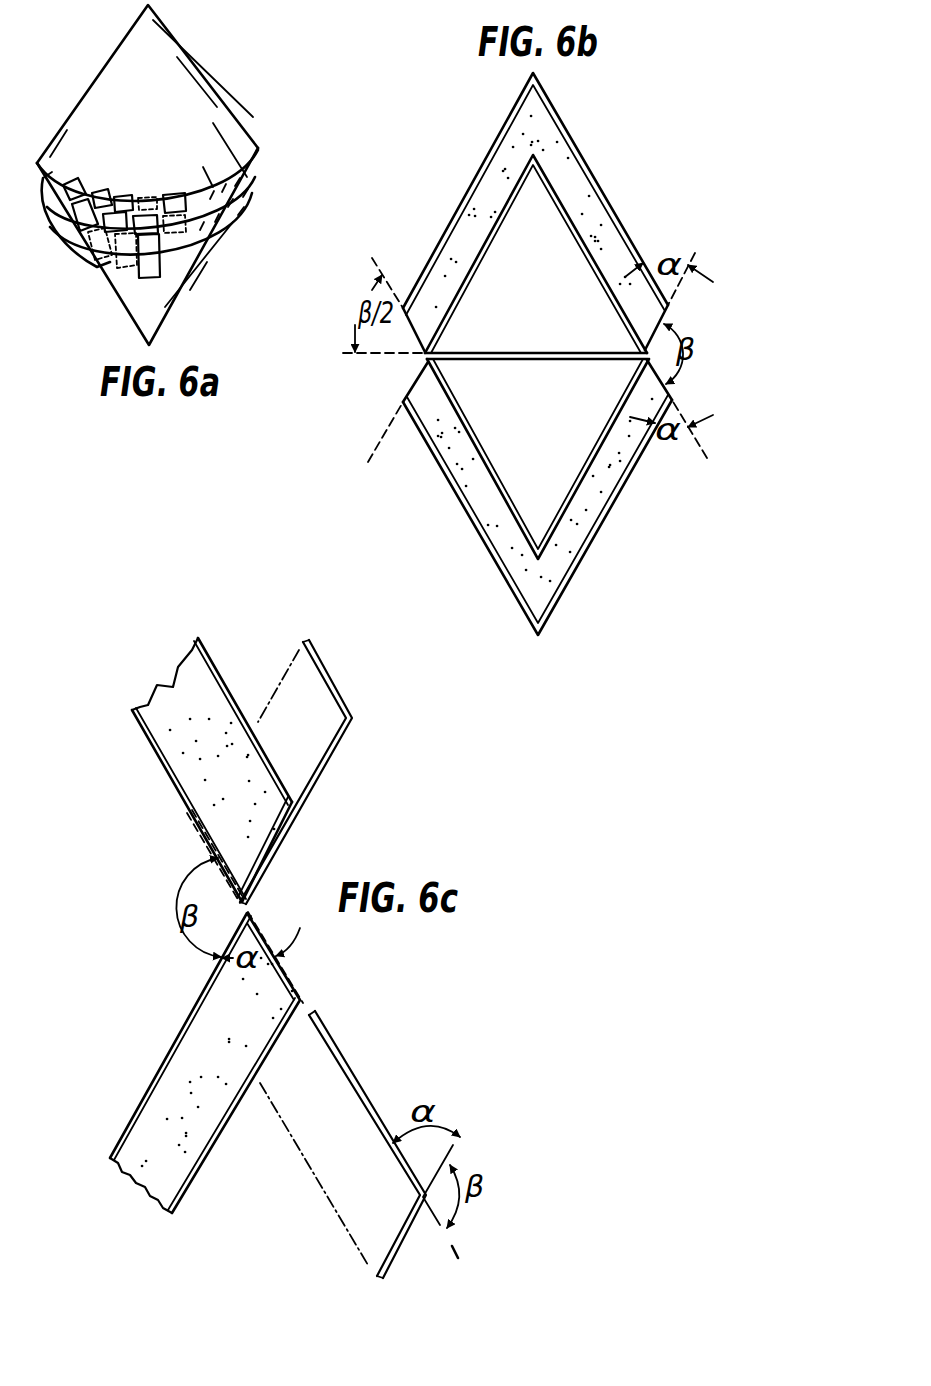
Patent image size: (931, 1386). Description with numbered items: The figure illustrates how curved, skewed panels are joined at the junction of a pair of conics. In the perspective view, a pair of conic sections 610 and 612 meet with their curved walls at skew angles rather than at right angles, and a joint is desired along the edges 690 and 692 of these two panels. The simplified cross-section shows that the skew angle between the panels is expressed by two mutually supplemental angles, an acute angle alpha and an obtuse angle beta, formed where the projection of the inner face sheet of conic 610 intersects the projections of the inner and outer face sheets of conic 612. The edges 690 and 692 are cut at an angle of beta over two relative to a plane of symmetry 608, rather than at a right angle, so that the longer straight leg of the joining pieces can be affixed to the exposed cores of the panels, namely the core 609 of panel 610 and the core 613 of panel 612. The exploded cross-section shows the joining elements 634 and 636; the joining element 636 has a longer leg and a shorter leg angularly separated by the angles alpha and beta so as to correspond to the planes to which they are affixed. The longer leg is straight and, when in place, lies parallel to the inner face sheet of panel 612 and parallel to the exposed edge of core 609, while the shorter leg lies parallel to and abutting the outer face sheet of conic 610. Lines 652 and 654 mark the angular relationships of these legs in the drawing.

In FIG. 6b, the plane of symmetry 608 is at (389, 355).
In FIG. 6b, the core 609 is at (513, 565).
In FIG. 6c, the core 609 is at (149, 1190).
In FIG. 6a, the conic section 610 is at (190, 283).
In FIG. 6b, the conic section 610 is at (553, 615).
In FIG. 6c, the conic section 610 is at (126, 1170).
In FIG. 6a, the conic section 612 is at (113, 65).
In FIG. 6b, the conic section 612 is at (597, 179).
In FIG. 6c, the conic section 612 is at (150, 708).
In FIG. 6b, the core 613 is at (563, 143).
In FIG. 6c, the core 613 is at (175, 688).
In FIG. 6a, the joining element 634 is at (128, 197).
In FIG. 6c, the joining element 634 is at (362, 641).
In FIG. 6a, the joining element 636 is at (80, 232).
In FIG. 6c, the joining element 636 is at (428, 1086).
In FIG. 6c, the reference line 652 is at (457, 1248).
In FIG. 6c, the vertex / intersection point 654 is at (424, 1199).
In FIG. 6a, the edge 690 is at (250, 188).
In FIG. 6a, the edge 692 is at (222, 214).